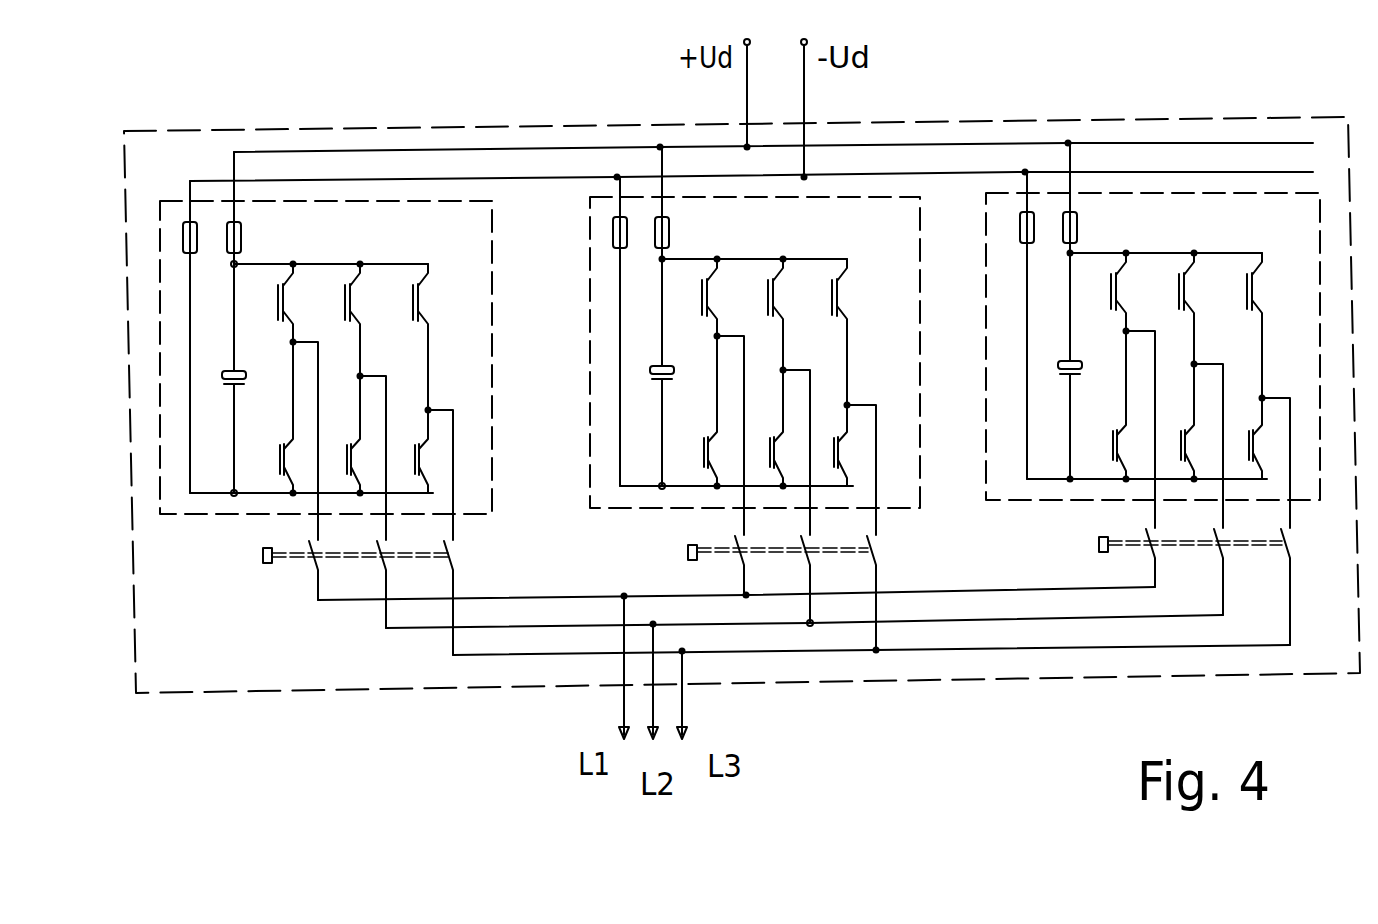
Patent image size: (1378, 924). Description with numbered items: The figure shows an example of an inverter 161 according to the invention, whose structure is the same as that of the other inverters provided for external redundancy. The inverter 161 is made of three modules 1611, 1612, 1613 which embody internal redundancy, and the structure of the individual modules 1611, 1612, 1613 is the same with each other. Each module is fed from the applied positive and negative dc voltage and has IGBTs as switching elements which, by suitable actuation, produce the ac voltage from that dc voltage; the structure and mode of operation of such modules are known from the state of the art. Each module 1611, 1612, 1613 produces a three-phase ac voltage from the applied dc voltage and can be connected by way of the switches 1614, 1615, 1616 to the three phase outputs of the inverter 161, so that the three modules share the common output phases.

The inverter 161 is at (1284, 130).
The module 1611 is at (462, 251).
The module 1612 is at (890, 246).
The module 1613 is at (1299, 241).
The switch 1614 is at (321, 598).
The switch 1615 is at (747, 593).
The switch 1616 is at (1156, 587).